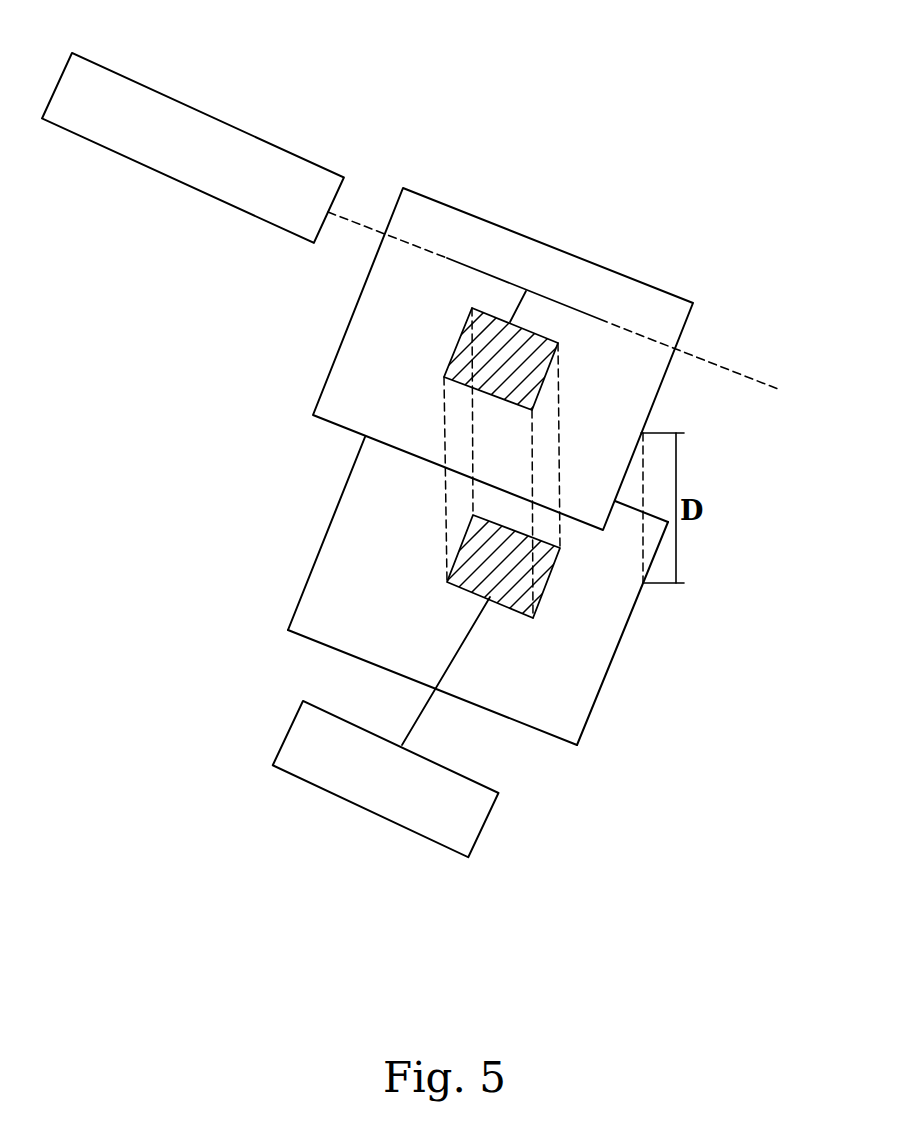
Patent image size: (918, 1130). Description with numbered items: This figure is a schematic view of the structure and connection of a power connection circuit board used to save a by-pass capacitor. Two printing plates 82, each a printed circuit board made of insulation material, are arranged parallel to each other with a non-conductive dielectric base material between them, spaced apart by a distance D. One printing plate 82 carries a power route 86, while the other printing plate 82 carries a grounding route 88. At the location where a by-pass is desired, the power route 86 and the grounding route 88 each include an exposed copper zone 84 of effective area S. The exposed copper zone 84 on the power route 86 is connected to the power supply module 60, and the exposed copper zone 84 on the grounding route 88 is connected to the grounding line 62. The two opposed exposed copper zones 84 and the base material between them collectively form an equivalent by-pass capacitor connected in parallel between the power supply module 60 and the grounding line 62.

The power supply module 60 is at (232, 127).
The grounding line 62 is at (370, 813).
The printing plate 82 is at (358, 577).
The exposed copper zone 84 is at (505, 572).
The power route 86 is at (557, 298).
The grounding route 88 is at (460, 653).